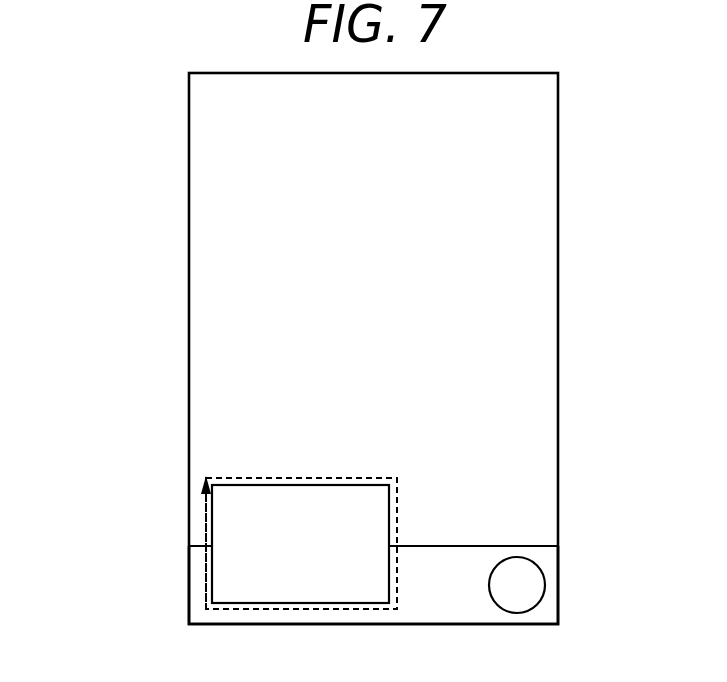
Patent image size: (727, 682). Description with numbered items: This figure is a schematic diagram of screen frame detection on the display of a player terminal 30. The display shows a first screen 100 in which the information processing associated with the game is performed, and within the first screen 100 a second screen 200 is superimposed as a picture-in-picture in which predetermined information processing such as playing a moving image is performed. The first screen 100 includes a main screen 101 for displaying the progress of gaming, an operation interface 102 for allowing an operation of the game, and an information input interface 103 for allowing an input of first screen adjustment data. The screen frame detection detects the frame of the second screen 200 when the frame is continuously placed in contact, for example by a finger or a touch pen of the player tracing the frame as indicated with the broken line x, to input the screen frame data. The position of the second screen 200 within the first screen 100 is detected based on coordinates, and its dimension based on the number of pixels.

The player terminal 30 is at (148, 210).
The first screen 100 is at (181, 306).
The main screen 101 is at (232, 385).
The operation interface 102 is at (198, 612).
The information input interface 103 is at (545, 583).
The second screen 200 is at (208, 523).
The broken line x is at (205, 575).